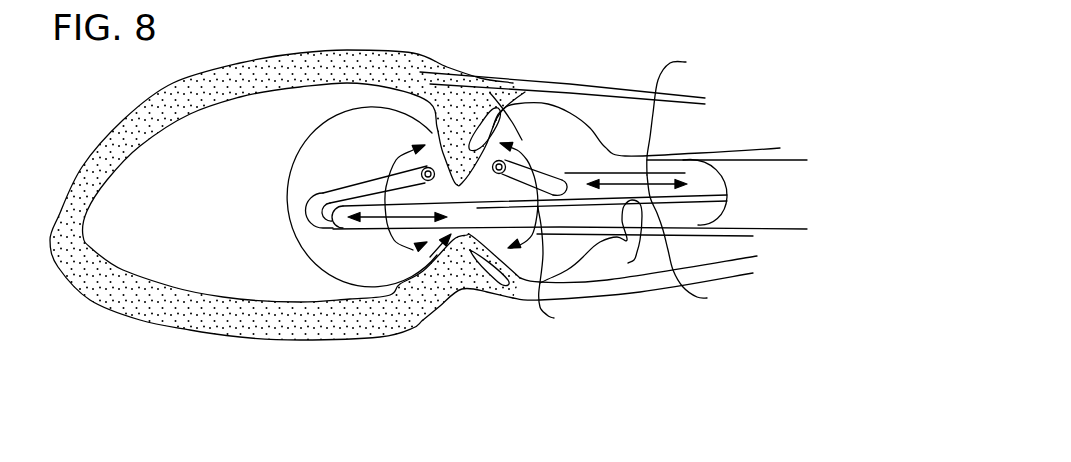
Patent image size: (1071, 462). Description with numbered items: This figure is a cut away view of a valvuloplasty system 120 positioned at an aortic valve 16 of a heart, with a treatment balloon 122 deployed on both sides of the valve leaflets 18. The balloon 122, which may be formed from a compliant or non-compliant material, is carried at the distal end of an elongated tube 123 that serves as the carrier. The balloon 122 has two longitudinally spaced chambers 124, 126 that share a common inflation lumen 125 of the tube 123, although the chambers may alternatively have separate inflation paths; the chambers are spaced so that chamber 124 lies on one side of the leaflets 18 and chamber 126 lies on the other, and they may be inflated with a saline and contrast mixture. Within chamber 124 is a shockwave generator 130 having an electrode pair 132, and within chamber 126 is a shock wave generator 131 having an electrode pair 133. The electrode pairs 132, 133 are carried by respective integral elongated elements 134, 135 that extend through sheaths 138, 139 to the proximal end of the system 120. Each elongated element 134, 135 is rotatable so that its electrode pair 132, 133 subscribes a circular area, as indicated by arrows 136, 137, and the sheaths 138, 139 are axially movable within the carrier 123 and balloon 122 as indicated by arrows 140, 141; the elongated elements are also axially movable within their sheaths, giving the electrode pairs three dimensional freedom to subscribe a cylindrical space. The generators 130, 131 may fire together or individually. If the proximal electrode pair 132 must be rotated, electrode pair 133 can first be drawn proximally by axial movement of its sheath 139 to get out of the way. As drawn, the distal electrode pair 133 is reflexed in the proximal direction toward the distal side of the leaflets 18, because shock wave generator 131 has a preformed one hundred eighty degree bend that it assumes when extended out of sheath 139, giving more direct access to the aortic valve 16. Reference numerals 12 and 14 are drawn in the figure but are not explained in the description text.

The bladder 12 is at (172, 209).
The bladder wall 14 is at (634, 112).
The aortic valve 16 is at (423, 247).
The leaflets 18 is at (459, 127).
The valvuloplasty system 120 is at (682, 114).
The treatment balloon 122 is at (305, 115).
The elongated tube 123 is at (757, 153).
The balloon chamber 124 is at (583, 267).
The inflation lumen 125 is at (677, 102).
The balloon chamber 126 is at (370, 229).
The shockwave generator 130 is at (553, 140).
The shock wave generator 131 is at (362, 160).
The electrode pair 132 is at (505, 172).
The electrode pair 133 is at (377, 167).
The elongated element 134 is at (568, 173).
The elongated element 135 is at (317, 220).
The arrow 136 is at (537, 210).
The arrow 137 is at (352, 187).
The sheath 138 is at (591, 241).
The sheath 139 is at (335, 228).
The arrow 140 is at (693, 241).
The arrow 141 is at (382, 230).